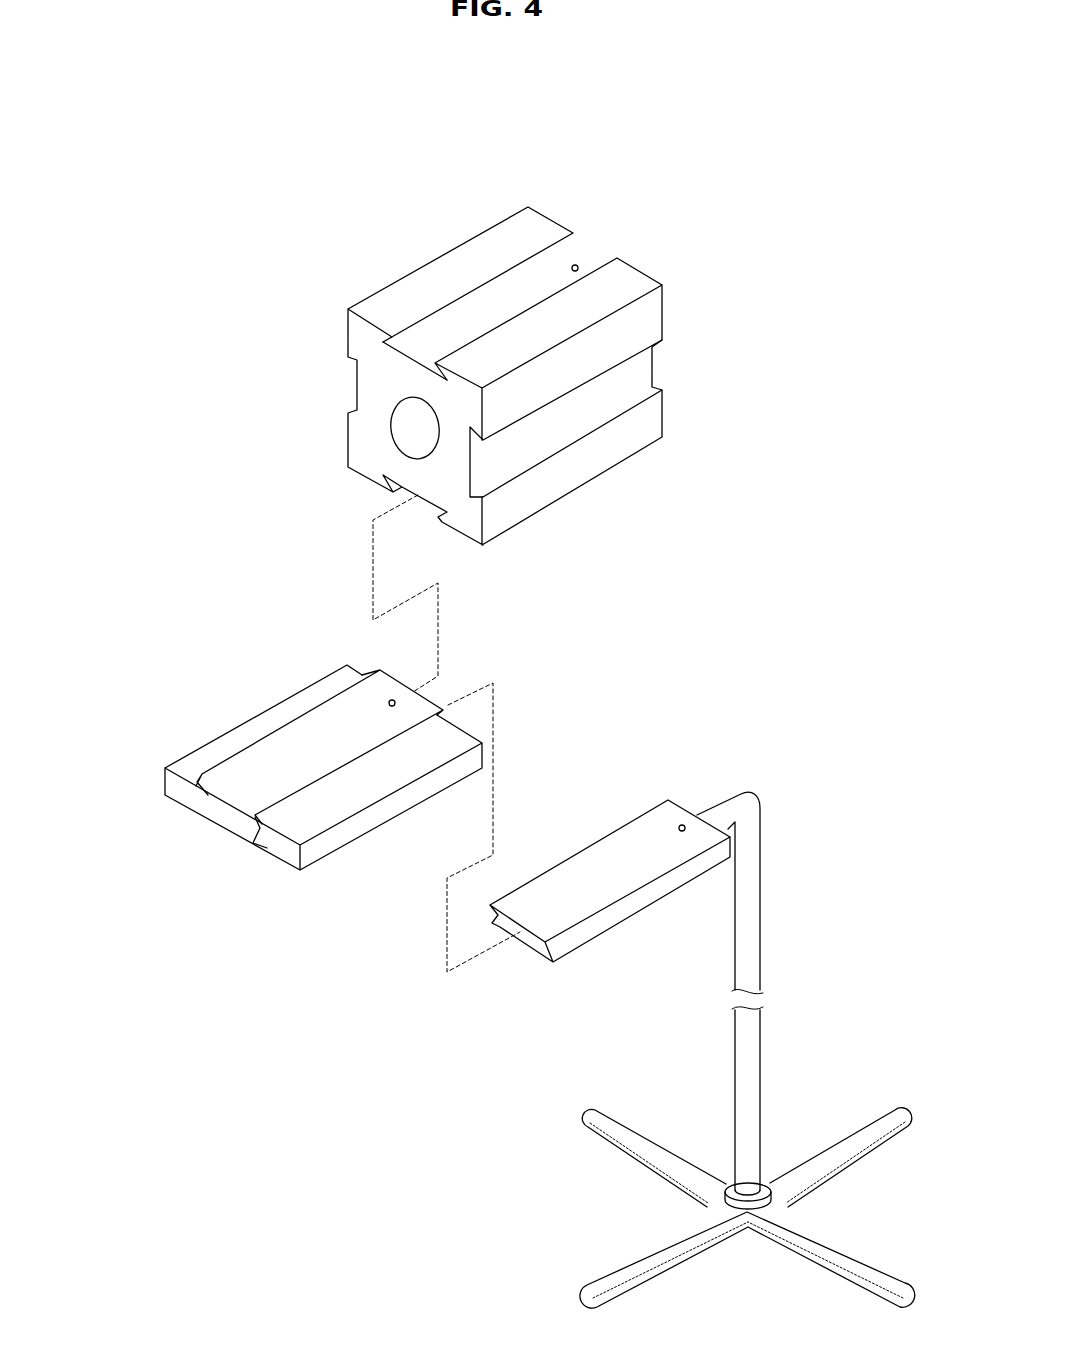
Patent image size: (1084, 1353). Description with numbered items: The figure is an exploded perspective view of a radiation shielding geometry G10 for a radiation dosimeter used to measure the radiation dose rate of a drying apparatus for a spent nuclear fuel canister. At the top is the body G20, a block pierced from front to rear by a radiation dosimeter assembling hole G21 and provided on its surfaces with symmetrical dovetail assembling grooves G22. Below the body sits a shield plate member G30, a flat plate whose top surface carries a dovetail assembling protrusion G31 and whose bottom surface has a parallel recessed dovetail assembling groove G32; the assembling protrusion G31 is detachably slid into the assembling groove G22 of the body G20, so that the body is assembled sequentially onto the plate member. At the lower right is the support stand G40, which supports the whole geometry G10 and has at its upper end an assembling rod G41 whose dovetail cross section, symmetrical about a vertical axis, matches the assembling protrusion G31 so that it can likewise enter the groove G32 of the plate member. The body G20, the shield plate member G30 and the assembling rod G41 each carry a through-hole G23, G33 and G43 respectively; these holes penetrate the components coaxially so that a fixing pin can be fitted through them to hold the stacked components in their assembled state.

The radiation shielding geometry G10 is at (275, 150).
The body G20 is at (490, 223).
The radiation dosimeter assembling hole G21 is at (403, 427).
The assembling groove G22 is at (424, 337).
The through-hole G23 is at (578, 266).
The shield plate member G30 is at (233, 725).
The assembling protrusion G31 is at (233, 770).
The assembling groove G32 is at (228, 822).
The through-hole G33 is at (392, 700).
The support stand G40 is at (762, 935).
The assembling rod G41 is at (623, 910).
The through-hole G43 is at (682, 825).